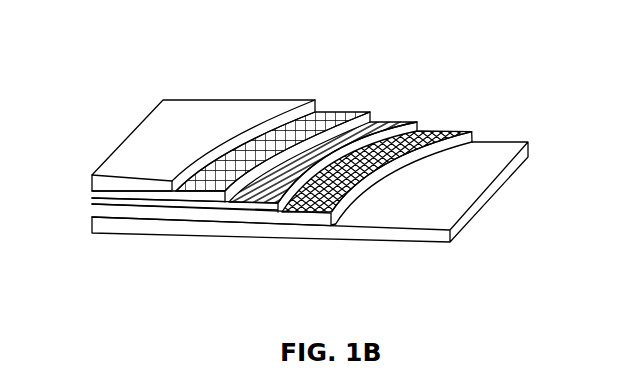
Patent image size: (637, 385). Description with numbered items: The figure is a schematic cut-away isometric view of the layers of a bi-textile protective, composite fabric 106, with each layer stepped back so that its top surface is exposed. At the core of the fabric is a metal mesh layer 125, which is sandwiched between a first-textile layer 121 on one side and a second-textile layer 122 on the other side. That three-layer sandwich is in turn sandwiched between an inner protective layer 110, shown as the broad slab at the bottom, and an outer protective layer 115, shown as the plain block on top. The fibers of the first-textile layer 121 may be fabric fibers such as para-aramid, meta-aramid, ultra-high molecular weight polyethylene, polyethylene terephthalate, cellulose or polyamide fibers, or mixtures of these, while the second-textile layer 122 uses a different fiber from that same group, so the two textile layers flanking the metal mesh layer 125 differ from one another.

The bi-textile protective, composite fabric 106 is at (279, 287).
The inner protective layer 110 is at (497, 196).
The outer protective layer 115 is at (148, 133).
The first-textile layer 121 is at (462, 130).
The second-textile layer 122 is at (333, 113).
The metal mesh layer 125 is at (409, 121).